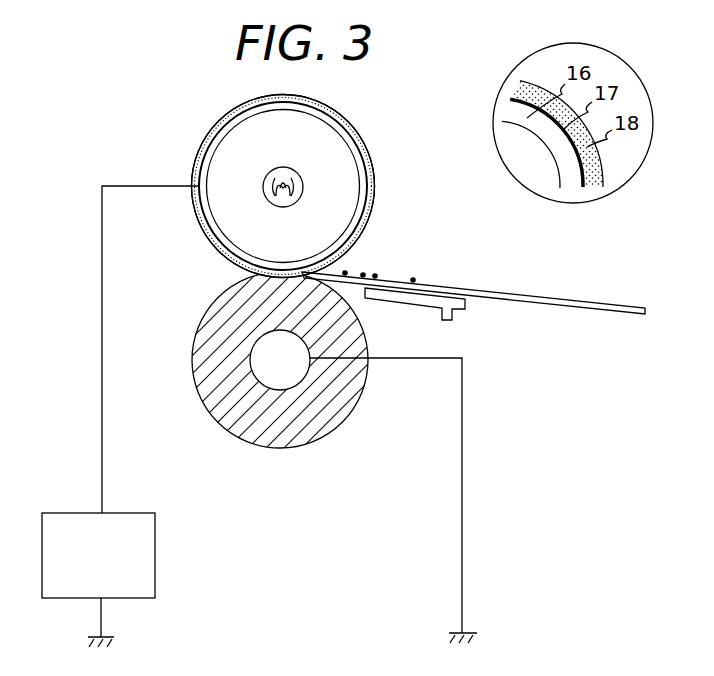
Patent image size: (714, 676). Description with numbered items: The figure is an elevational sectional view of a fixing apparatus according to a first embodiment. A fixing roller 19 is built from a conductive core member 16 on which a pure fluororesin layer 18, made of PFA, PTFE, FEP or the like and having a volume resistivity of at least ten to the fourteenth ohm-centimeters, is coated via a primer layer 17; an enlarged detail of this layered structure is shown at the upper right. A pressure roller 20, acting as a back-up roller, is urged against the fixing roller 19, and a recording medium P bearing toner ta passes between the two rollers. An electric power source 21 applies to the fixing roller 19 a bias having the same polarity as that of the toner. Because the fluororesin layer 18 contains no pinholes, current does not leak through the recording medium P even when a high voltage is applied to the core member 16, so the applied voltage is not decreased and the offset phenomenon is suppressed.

The conductive core member 16 is at (362, 162).
The primer layer 17 is at (355, 140).
The pure fluororesin layer 18 is at (340, 118).
The fixing roller 19 is at (329, 181).
The pressure roller 20 is at (316, 449).
The electric power source 21 is at (139, 513).
The recording medium P is at (553, 296).
The toner ta is at (378, 272).